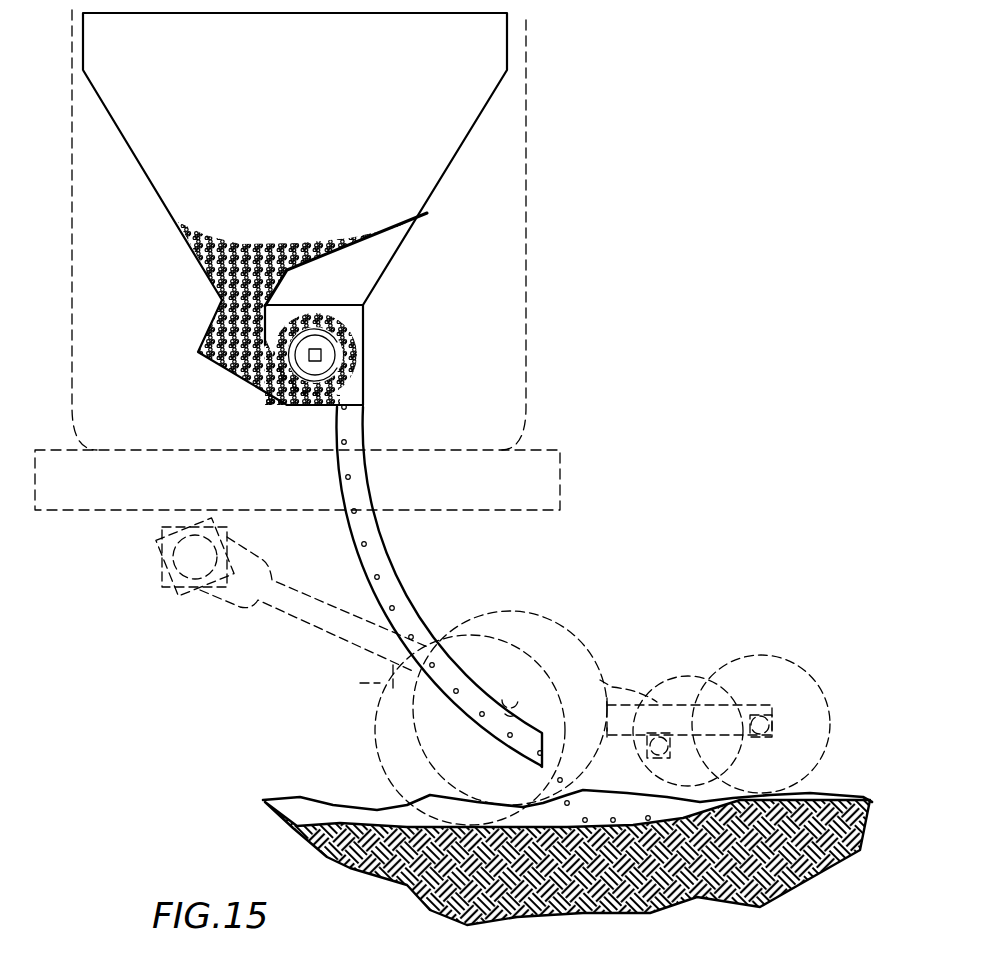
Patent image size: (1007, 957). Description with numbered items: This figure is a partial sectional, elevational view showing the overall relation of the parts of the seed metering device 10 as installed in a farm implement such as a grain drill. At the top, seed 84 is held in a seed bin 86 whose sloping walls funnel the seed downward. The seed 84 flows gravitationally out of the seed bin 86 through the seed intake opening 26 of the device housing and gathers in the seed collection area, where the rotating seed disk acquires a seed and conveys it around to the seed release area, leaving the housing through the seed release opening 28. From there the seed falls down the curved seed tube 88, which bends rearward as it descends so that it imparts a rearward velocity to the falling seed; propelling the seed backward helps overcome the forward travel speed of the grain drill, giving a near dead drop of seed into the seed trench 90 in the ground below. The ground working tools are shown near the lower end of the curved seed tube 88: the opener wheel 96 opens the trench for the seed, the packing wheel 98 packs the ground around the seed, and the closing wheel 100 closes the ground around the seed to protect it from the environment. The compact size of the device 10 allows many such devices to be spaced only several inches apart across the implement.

The seed metering device 10 is at (363, 331).
The seed intake opening 26 is at (222, 298).
The seed release opening 28 is at (337, 408).
The seed 84 is at (243, 232).
The seed bin 86 is at (442, 175).
The curved seed tube 88 is at (400, 582).
The seed trench 90 is at (340, 820).
The opener wheel 96 is at (380, 684).
The packing wheel 98 is at (641, 678).
The closing wheel 100 is at (772, 655).